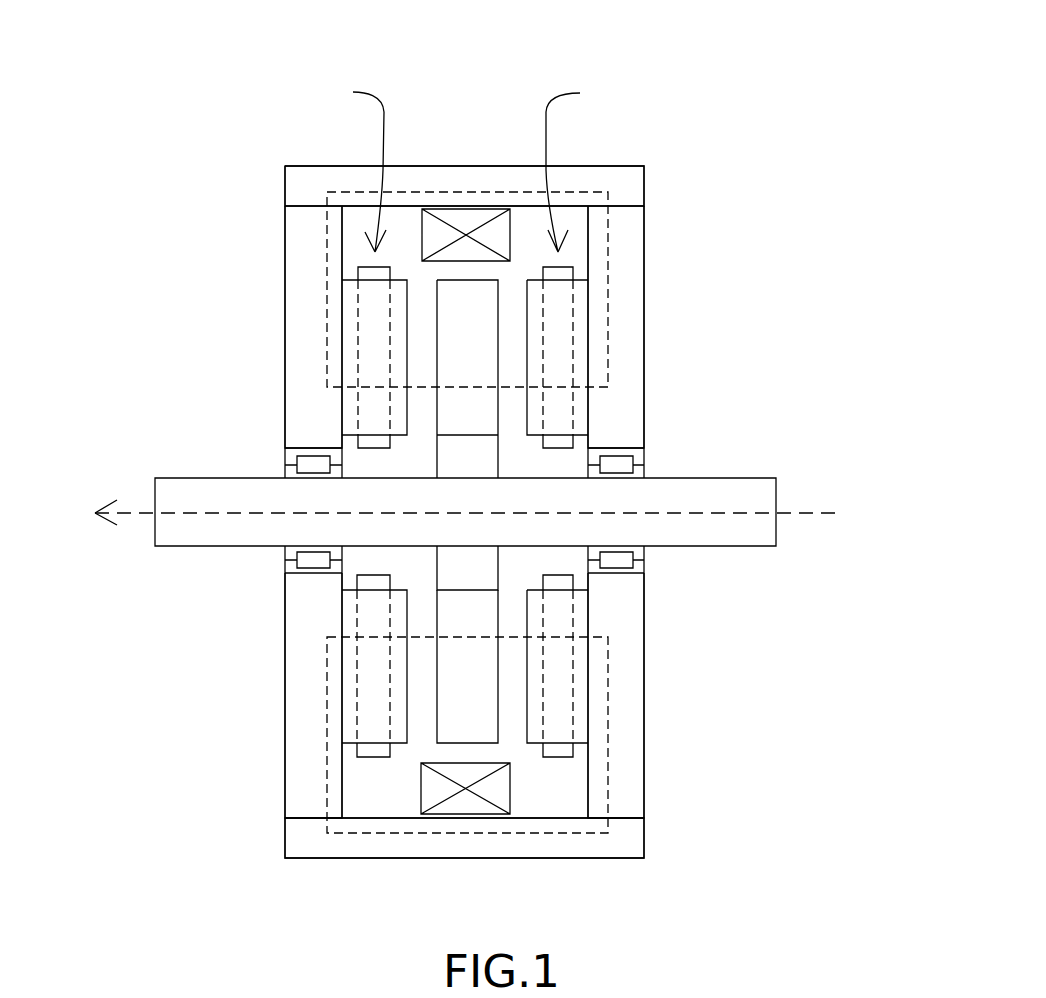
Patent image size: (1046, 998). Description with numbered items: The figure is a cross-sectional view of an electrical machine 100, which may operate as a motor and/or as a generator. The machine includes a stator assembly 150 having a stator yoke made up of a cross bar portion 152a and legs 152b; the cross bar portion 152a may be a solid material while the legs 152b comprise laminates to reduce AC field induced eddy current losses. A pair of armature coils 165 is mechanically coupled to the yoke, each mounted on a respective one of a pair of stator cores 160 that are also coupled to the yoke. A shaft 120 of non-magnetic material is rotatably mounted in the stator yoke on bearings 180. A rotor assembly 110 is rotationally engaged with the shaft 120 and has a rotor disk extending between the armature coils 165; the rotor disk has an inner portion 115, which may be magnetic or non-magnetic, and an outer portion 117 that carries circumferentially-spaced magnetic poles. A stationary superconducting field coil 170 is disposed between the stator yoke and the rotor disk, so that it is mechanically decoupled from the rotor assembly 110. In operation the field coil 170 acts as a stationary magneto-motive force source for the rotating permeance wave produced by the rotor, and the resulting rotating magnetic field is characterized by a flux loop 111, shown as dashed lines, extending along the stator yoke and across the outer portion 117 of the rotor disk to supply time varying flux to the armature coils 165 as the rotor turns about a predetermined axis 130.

The electrical machine 100 is at (665, 25).
The rotor assembly 110 is at (510, 747).
The flux loop 111 is at (611, 318).
The inner portion 115 is at (470, 572).
The outer portion 117 is at (472, 712).
The shaft 120 is at (750, 533).
The predetermined axis 130 is at (439, 512).
The stator assembly 150 is at (464, 165).
The cross bar portion 152a is at (628, 182).
The legs 152b is at (632, 266).
The stator cores 160 is at (580, 415).
The armature coils 165 is at (380, 442).
The stationary superconducting field coil 170 is at (458, 805).
The bearings 180 is at (313, 559).